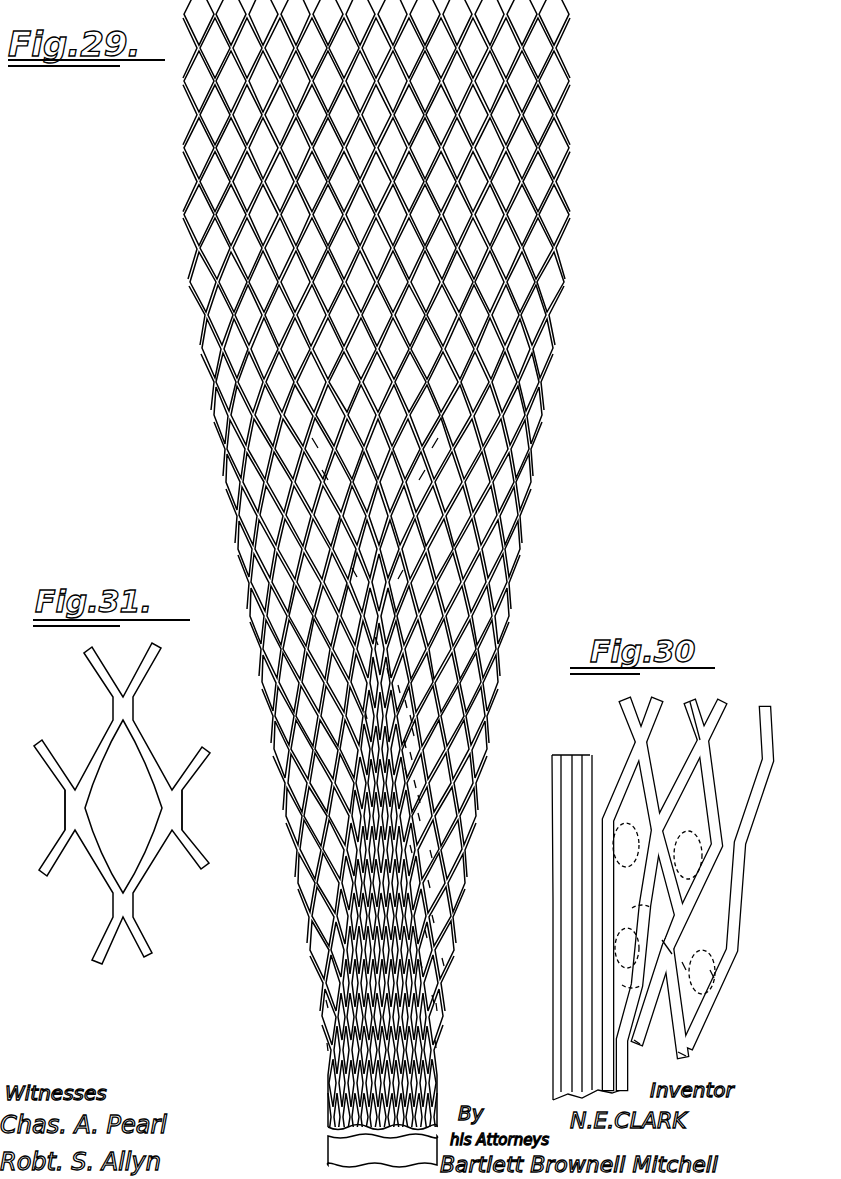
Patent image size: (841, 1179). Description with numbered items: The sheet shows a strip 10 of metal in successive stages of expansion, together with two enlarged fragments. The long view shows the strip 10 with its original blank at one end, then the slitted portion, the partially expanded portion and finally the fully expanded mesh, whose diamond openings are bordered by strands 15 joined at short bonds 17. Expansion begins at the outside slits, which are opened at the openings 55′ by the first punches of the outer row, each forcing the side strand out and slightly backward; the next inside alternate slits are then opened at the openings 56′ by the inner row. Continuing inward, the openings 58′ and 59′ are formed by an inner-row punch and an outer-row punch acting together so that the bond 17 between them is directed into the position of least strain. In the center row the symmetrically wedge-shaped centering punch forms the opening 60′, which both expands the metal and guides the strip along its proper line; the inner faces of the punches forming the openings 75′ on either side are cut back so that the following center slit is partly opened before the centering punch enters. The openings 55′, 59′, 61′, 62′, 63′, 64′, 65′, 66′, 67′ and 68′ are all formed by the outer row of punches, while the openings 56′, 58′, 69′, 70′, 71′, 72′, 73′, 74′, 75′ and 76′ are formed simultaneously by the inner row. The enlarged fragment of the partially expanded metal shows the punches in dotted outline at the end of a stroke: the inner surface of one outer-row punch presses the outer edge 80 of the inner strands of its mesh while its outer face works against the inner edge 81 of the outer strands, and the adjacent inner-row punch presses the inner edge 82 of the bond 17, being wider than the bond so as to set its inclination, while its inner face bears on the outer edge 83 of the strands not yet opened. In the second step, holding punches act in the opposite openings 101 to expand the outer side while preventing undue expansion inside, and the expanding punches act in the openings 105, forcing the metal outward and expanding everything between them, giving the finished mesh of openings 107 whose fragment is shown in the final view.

In FIG. 29, the binding band 10 is at (348, 1150).
In FIG. 29, the strand end 15 is at (436, 1003).
In FIG. 30, the strand end 15 is at (684, 1058).
In FIG. 31, the bond 17 is at (78, 808).
In FIG. 30, the bond 17 is at (665, 953).
In FIG. 29, the opening 55′ is at (435, 1040).
In FIG. 29, the opening 56′ is at (432, 995).
In FIG. 30, the opening 56′ is at (650, 1046).
In FIG. 29, the opening 58′ is at (420, 960).
In FIG. 30, the opening 58′ is at (633, 948).
In FIG. 29, the opening 59′ is at (442, 958).
In FIG. 30, the opening 59′ is at (702, 972).
In FIG. 29, the opening 60′ is at (375, 637).
In FIG. 31, the opening 60′ is at (122, 803).
In FIG. 29, the opening 61′ is at (425, 930).
In FIG. 30, the opening 61′ is at (688, 855).
In FIG. 29, the opening 62′ is at (428, 880).
In FIG. 30, the opening 62′ is at (677, 730).
In FIG. 29, the opening 63′ is at (410, 845).
In FIG. 29, the opening 64′ is at (418, 795).
In FIG. 29, the opening 65′ is at (405, 768).
In FIG. 29, the opening 66′ is at (404, 740).
In FIG. 29, the opening 67′ is at (410, 715).
In FIG. 29, the opening 68′ is at (398, 685).
In FIG. 29, the opening 69′ is at (432, 915).
In FIG. 30, the opening 69′ is at (626, 845).
In FIG. 29, the opening 70′ is at (430, 850).
In FIG. 30, the opening 70′ is at (662, 899).
In FIG. 29, the opening 71′ is at (418, 813).
In FIG. 29, the opening 72′ is at (414, 780).
In FIG. 29, the opening 73′ is at (410, 752).
In FIG. 29, the opening 74′ is at (412, 728).
In FIG. 29, the opening 75′ is at (365, 711).
In FIG. 29, the opening 76′ is at (387, 668).
In FIG. 30, the outer edge of the inner strands 80 is at (682, 967).
In FIG. 30, the inner edge of the outer strands 81 is at (712, 975).
In FIG. 30, the inner edge of the bond 82 is at (632, 990).
In FIG. 30, the outer edge of the strands 83 is at (641, 917).
In FIG. 29, the openings 101 is at (352, 568).
In FIG. 29, the openings 105 is at (322, 470).
In FIG. 29, the mesh strand 107 is at (312, 438).